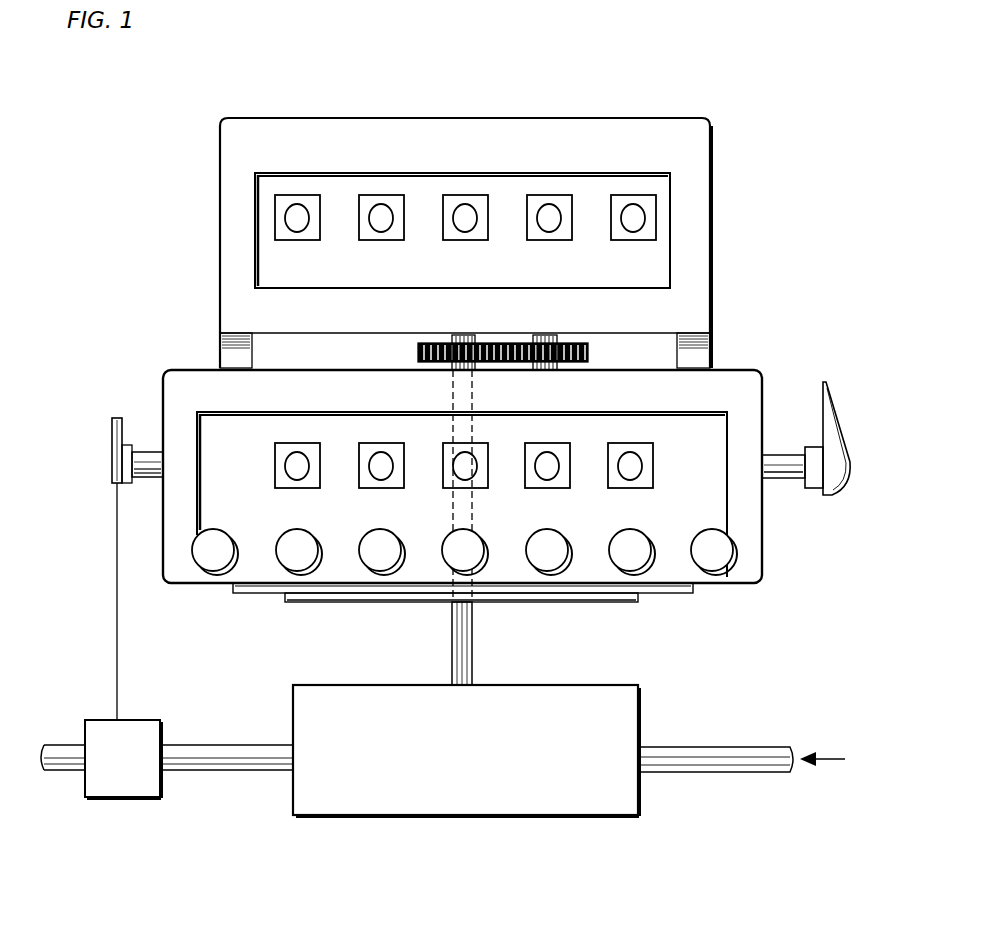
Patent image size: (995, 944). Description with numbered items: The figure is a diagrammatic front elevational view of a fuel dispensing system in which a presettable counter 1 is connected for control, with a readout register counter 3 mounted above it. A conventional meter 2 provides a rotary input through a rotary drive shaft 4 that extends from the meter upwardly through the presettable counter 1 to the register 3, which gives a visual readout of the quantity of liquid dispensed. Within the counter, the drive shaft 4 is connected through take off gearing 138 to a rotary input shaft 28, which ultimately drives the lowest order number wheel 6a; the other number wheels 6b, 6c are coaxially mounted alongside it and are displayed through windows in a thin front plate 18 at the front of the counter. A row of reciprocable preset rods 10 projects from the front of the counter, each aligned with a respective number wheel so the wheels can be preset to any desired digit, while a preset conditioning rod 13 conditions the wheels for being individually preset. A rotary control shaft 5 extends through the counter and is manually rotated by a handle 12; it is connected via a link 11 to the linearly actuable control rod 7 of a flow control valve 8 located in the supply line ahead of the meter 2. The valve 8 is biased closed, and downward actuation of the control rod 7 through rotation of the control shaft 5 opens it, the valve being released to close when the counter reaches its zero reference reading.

The presettable counter 1 is at (173, 359).
The meter 2 is at (473, 803).
The register counter 3 is at (632, 115).
The rotary drive shaft 4 is at (452, 646).
The rotary control shaft 5 is at (153, 462).
The lowest order number wheel 6a is at (620, 489).
The number wheel 6b is at (536, 489).
The number wheel 6c is at (300, 489).
The control rod 7 is at (117, 598).
The flow control valve 8 is at (120, 788).
The preset rods 10 is at (289, 560).
The link 11 is at (112, 421).
The handle 12 is at (831, 421).
The preset conditioning rod 13 is at (204, 560).
The front plate 18 is at (241, 483).
The rotary input shaft 28 is at (543, 369).
The take off gearing 138 is at (510, 336).